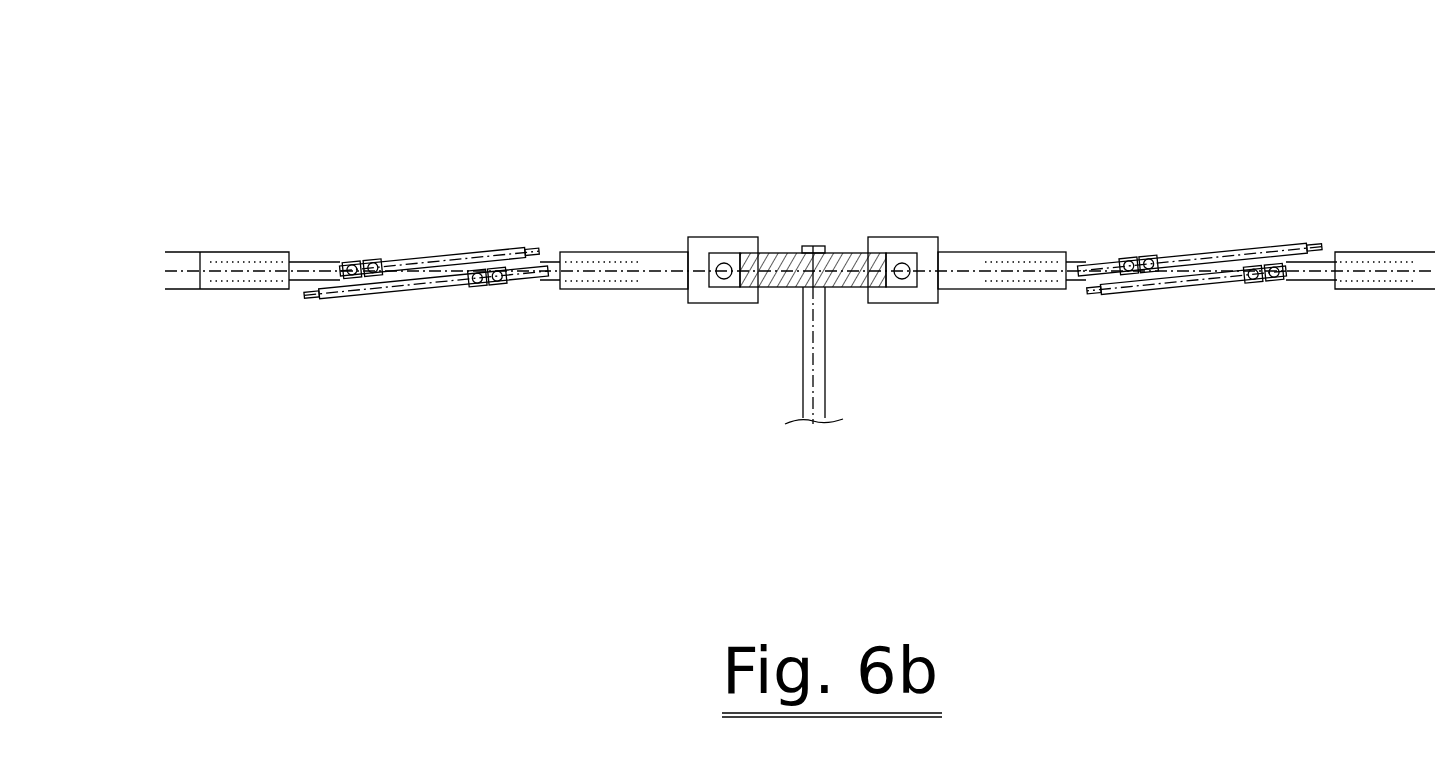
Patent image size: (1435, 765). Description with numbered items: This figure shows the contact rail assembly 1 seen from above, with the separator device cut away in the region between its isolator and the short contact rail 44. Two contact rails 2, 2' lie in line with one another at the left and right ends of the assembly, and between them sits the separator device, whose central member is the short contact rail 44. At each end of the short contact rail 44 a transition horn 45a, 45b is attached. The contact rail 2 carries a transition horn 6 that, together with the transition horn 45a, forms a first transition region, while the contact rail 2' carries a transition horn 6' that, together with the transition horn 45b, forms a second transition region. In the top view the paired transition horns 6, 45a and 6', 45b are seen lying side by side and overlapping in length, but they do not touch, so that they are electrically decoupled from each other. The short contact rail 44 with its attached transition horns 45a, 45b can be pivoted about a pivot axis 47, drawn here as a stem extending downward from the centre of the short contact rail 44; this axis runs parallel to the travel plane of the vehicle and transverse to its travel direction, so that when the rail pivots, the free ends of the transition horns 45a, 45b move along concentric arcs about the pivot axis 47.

The contact rail assembly 1 is at (1268, 186).
The contact rail 2 is at (252, 187).
The contact rail 2' is at (1360, 405).
The transition horn 6 is at (440, 180).
The transition horn 6' is at (1186, 412).
The short contact rail 44 is at (672, 253).
The transition horn 45a is at (418, 285).
The transition horn 45b is at (1205, 250).
The pivot axis 47 is at (810, 388).